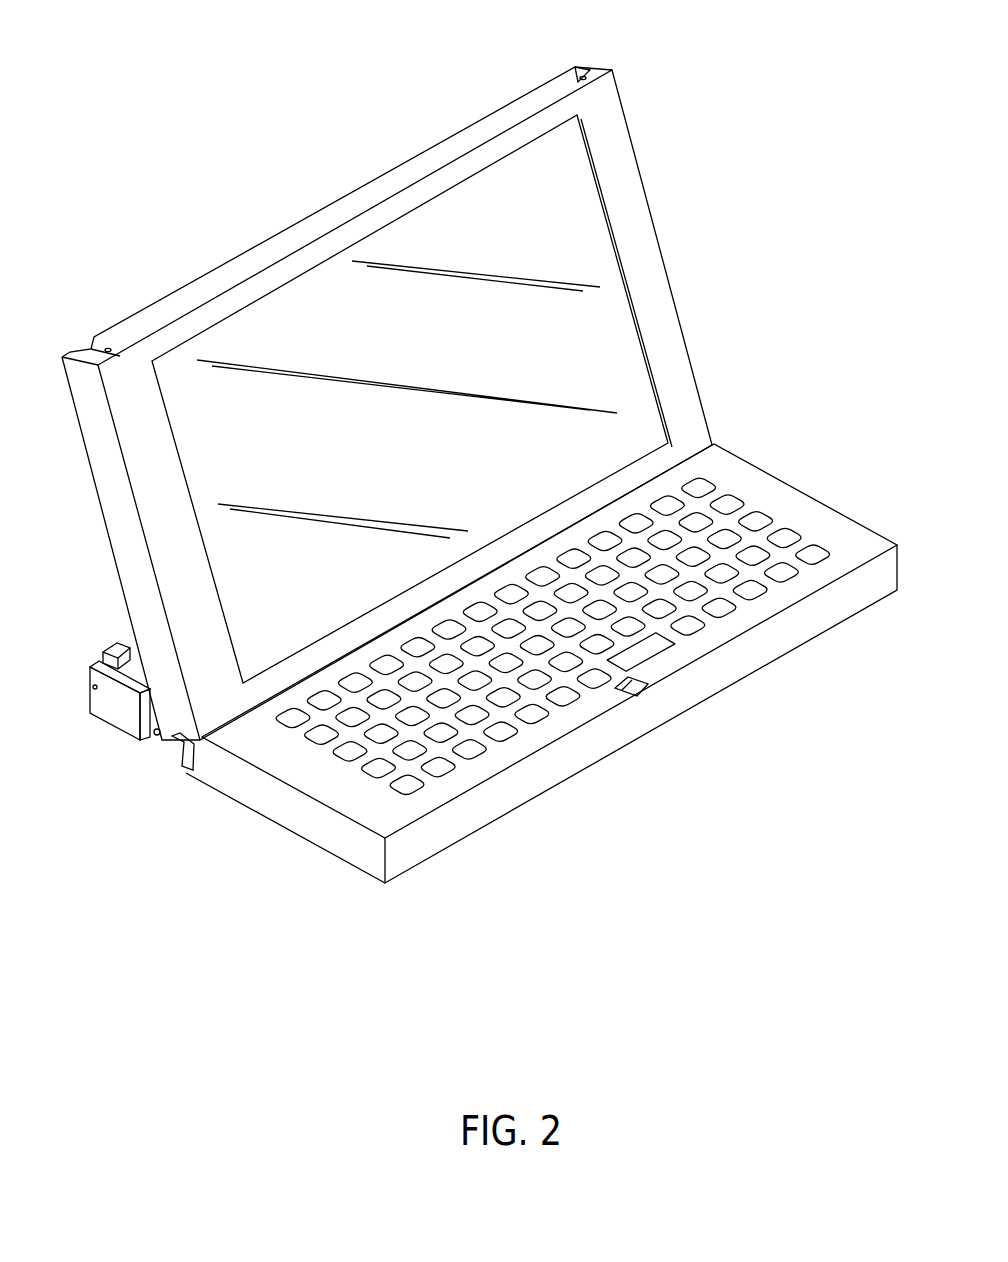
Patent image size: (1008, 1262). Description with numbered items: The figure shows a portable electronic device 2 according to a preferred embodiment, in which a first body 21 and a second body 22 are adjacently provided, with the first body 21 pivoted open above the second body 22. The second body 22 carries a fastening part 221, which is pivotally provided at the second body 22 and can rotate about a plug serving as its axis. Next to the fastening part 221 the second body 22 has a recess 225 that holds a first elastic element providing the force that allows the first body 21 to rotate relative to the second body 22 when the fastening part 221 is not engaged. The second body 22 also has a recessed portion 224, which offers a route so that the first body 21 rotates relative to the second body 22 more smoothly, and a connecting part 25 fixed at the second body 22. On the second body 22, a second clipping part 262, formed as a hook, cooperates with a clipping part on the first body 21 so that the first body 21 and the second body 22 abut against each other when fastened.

The portable electronic device 2 is at (204, 132).
The first body 21 is at (678, 363).
The second body 22 is at (797, 507).
The fastening part 221 is at (115, 643).
The recessed portion 224 is at (192, 768).
The recess 225 is at (130, 682).
The connecting part 25 is at (155, 737).
The second clipping part 262 is at (650, 675).